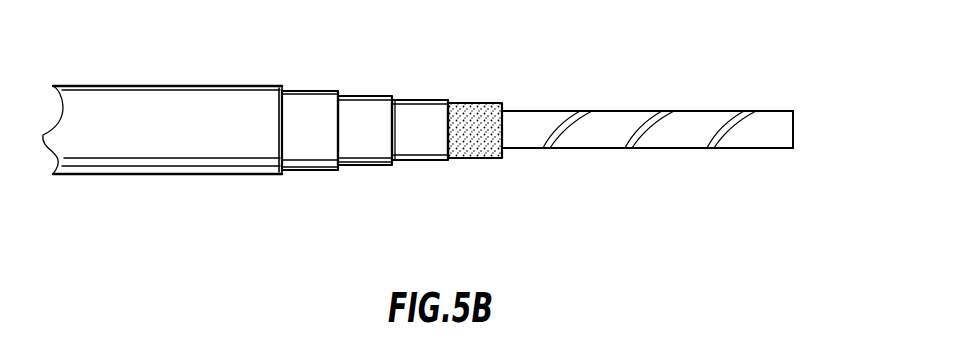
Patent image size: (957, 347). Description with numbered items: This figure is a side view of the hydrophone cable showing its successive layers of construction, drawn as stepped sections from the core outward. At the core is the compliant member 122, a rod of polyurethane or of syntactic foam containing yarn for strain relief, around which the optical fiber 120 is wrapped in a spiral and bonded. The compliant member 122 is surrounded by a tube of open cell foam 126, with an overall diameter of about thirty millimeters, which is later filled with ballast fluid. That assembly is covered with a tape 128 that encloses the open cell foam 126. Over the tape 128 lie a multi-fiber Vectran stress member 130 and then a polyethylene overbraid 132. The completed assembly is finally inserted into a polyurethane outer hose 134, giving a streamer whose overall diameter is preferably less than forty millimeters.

The optical fiber 120 is at (663, 110).
The compliant member 122 is at (795, 109).
The tube of open cell foam 126 is at (491, 103).
The tape 128 is at (430, 162).
The multi-fiber Vectran stress member 130 is at (367, 94).
The polyethylene overbraid 132 is at (308, 92).
The polyurethane outer hose 134 is at (143, 84).